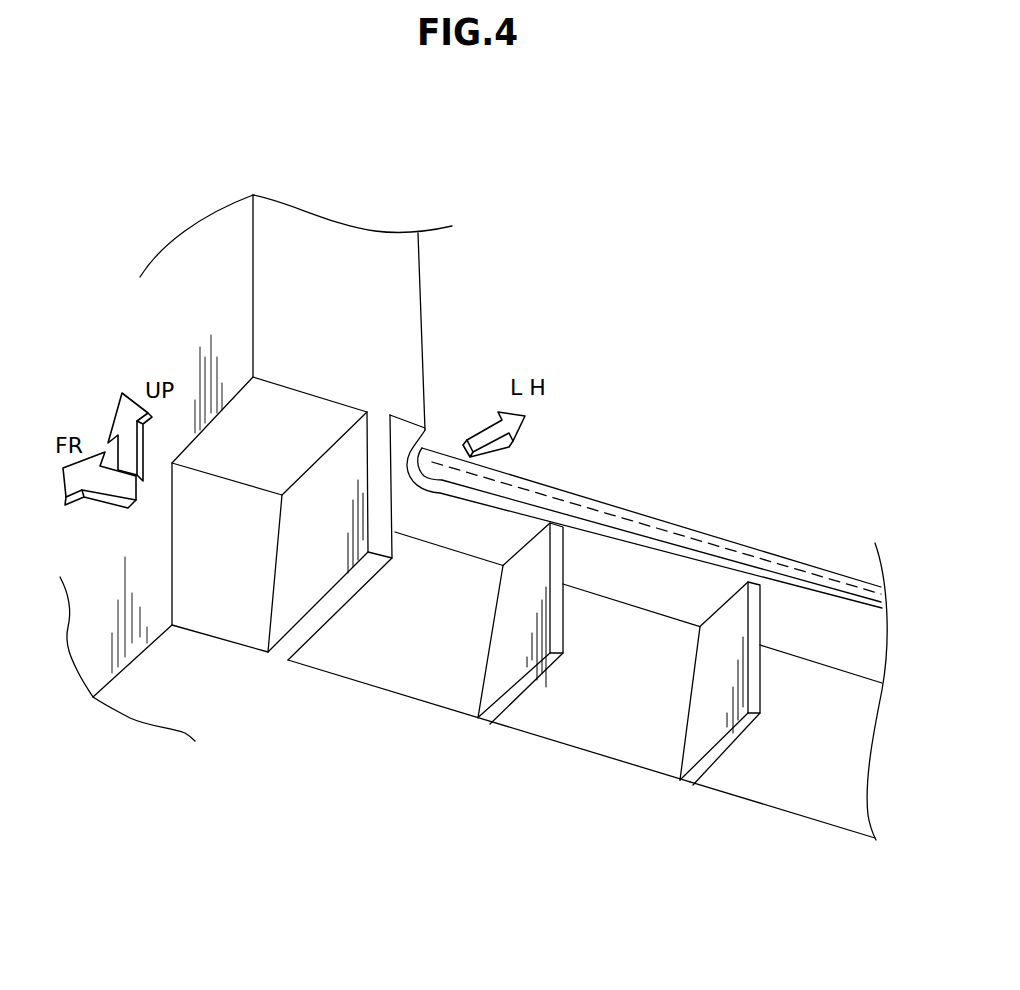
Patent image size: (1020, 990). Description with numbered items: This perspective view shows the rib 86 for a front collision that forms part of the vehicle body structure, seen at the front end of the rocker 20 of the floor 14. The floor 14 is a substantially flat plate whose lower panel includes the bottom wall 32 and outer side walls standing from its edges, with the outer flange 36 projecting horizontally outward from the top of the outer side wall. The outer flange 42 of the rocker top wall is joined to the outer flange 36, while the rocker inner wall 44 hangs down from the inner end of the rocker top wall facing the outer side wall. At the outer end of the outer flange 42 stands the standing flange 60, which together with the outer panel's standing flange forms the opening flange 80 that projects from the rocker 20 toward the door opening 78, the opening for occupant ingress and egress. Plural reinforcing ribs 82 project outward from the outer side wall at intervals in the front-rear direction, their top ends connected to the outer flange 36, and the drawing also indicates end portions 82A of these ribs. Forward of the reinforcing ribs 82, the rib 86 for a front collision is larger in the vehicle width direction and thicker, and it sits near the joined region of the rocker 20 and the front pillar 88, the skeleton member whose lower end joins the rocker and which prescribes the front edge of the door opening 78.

The floor 14 is at (727, 840).
The rocker 20 is at (819, 796).
The bottom wall 32 is at (400, 718).
The outer flange 36 is at (606, 565).
The outer flange 42 is at (513, 497).
The rocker inner wall 44 is at (620, 738).
The standing flange 60 is at (644, 516).
The opening flange 80 is at (649, 513).
The door opening 78 is at (674, 389).
The reinforcing rib 82 is at (669, 664).
The rib end portion 82A is at (563, 633).
The rib for a front collision 86 is at (322, 585).
The front pillar 88 is at (428, 287).